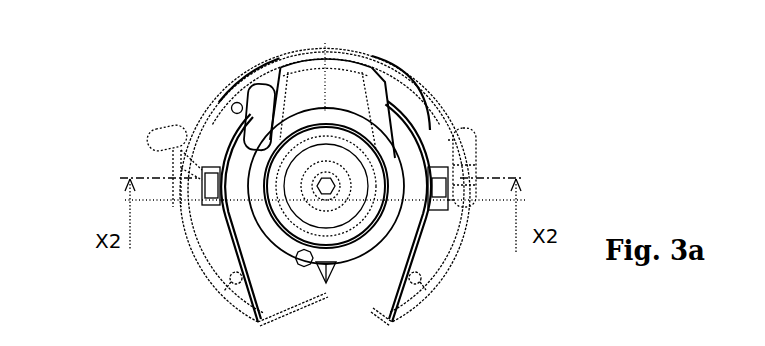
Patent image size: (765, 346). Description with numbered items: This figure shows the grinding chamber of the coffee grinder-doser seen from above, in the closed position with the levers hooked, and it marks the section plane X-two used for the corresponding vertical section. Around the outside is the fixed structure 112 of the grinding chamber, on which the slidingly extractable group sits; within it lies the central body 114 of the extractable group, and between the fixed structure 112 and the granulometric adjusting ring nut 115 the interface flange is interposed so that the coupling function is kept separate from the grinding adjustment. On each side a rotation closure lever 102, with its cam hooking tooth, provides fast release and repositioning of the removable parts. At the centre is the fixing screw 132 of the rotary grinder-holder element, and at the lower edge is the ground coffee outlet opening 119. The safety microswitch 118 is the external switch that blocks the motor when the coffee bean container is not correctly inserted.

The rotation closure lever 102 is at (180, 149).
The fixed structure of the grinding chamber 112 is at (425, 213).
The central body of the extractable group 114 is at (270, 157).
The granulometric adjusting ring nut 115 is at (410, 130).
The safety microswitch 118 is at (360, 112).
The ground coffee outlet opening 119 is at (330, 268).
The fixing screw of the rotary grinder-holder element 132 is at (316, 178).